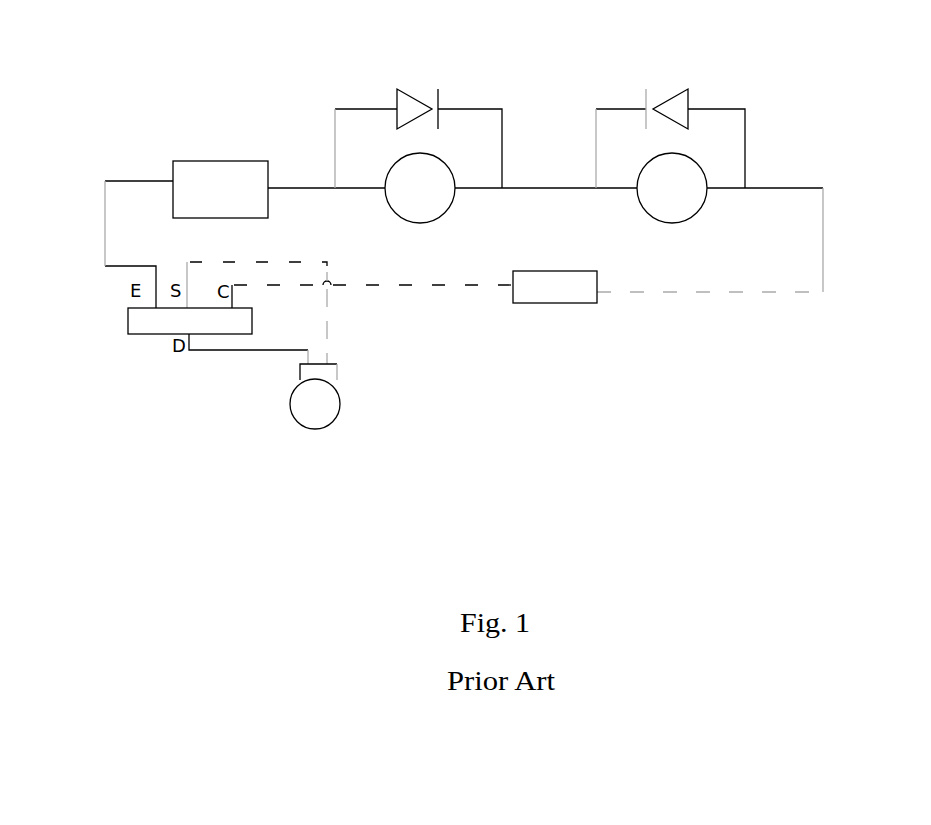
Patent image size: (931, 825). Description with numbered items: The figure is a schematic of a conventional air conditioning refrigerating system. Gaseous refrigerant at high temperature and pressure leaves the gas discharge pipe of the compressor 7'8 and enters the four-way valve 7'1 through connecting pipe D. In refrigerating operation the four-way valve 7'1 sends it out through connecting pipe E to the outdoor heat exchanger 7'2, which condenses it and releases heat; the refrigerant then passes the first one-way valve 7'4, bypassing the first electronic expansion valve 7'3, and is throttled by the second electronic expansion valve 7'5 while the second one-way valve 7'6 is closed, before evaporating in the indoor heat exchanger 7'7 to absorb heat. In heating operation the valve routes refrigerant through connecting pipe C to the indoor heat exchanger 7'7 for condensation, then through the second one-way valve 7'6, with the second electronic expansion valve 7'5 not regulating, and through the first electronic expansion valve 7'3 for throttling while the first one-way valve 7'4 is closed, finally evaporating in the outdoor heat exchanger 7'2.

The four-way valve 7'1 is at (146, 324).
The outdoor heat exchanger 7'2 is at (220, 161).
The first electronic expansion valve 7'3 is at (380, 192).
The first one-way valve 7'4 is at (416, 79).
The second electronic expansion valve 7'5 is at (630, 191).
The second one-way valve 7'6 is at (684, 79).
The indoor heat exchanger 7'7 is at (559, 320).
The compressor 7'8 is at (328, 427).